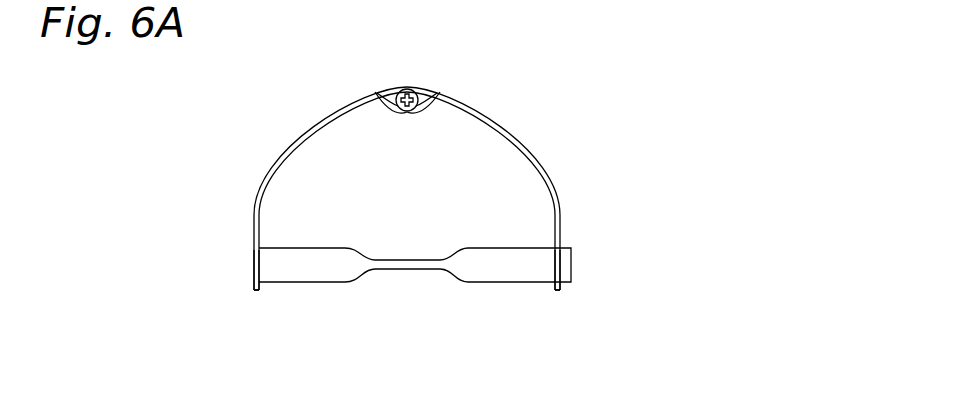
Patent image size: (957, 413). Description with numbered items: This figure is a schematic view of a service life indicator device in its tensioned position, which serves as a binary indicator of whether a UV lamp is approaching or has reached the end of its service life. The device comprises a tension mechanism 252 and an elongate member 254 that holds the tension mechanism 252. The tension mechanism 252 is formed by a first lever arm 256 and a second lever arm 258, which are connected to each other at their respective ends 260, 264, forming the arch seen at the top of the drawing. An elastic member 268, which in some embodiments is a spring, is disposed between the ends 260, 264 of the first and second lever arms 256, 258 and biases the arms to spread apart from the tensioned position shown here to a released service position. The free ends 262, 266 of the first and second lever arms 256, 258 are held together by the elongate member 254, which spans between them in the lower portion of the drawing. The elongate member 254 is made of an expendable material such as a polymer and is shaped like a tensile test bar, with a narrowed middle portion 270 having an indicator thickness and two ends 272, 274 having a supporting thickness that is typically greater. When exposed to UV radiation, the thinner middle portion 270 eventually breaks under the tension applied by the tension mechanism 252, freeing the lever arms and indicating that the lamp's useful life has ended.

The tension mechanism 252 is at (412, 206).
The elongate member 254 is at (409, 310).
The first lever arm 256 is at (308, 132).
The second lever arm 258 is at (536, 164).
The end of first lever arm 260 is at (378, 92).
The free end of first lever arm 262 is at (253, 288).
The end of second lever arm 264 is at (430, 92).
The free end of second lever arm 266 is at (559, 289).
The elastic member 268 is at (418, 111).
The middle portion 270 is at (418, 270).
The first end of elongate member 272 is at (273, 284).
The second end of elongate member 274 is at (543, 285).